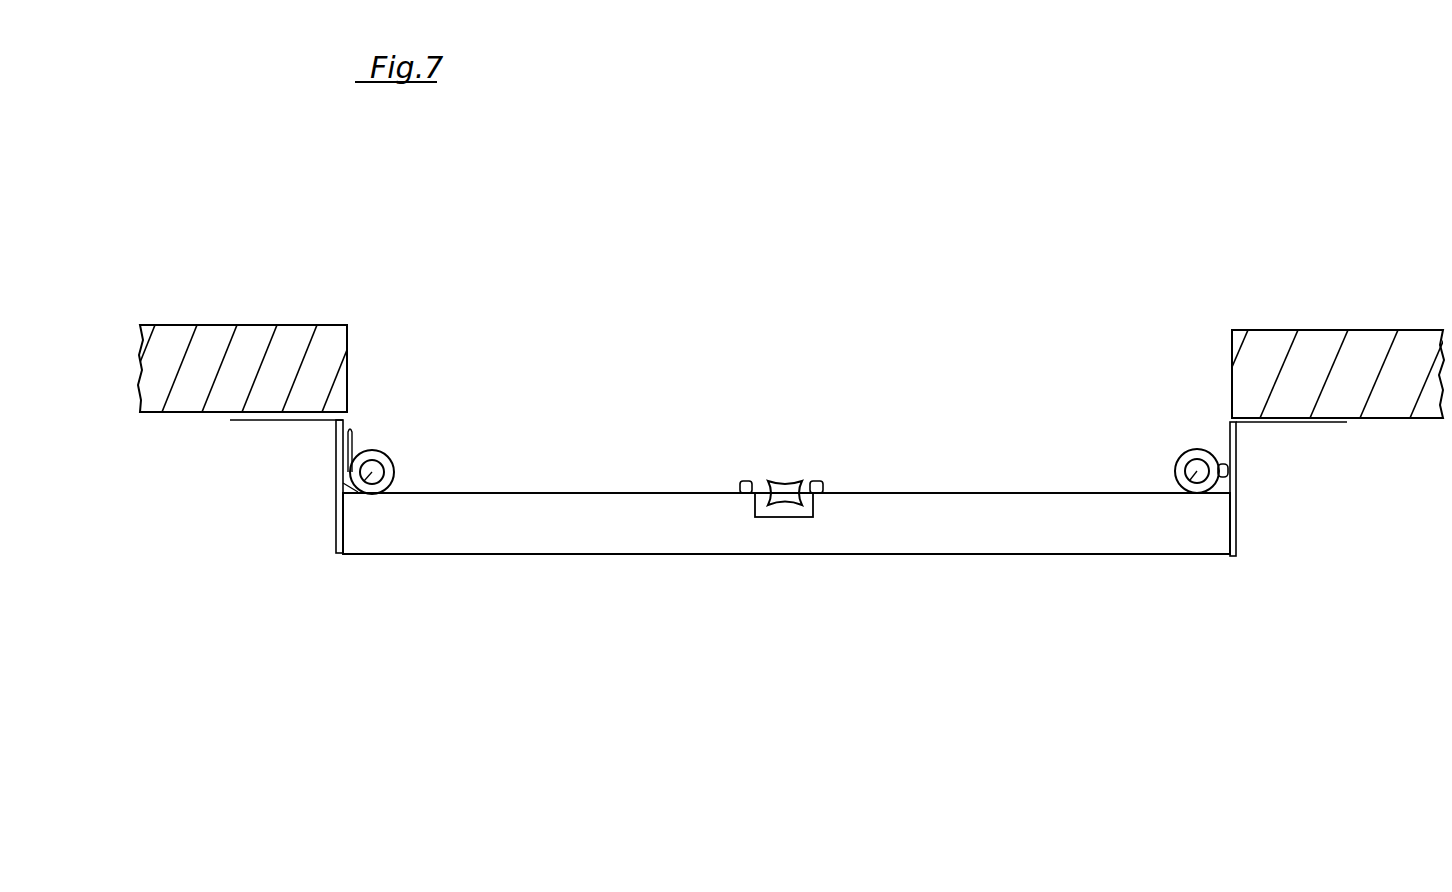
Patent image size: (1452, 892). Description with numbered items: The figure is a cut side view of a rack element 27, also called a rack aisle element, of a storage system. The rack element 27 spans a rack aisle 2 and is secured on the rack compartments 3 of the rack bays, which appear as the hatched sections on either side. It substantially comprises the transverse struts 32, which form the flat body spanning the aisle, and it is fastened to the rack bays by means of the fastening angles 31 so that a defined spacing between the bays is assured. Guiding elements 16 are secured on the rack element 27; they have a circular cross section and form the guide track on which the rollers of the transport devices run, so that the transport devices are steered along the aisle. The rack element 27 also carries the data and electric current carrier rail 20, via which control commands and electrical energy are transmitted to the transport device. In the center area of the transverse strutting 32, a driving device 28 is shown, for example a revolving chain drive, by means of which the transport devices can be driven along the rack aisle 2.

The rack aisle 2 is at (765, 333).
The rack compartments 3 is at (198, 260).
The guiding elements 16 is at (337, 503).
The electric current and data carrier rail 20 is at (337, 450).
The rack element 27 is at (573, 572).
The driving device 28 is at (788, 495).
The fastening angles 31 is at (1236, 495).
The transverse struts 32 is at (1048, 537).